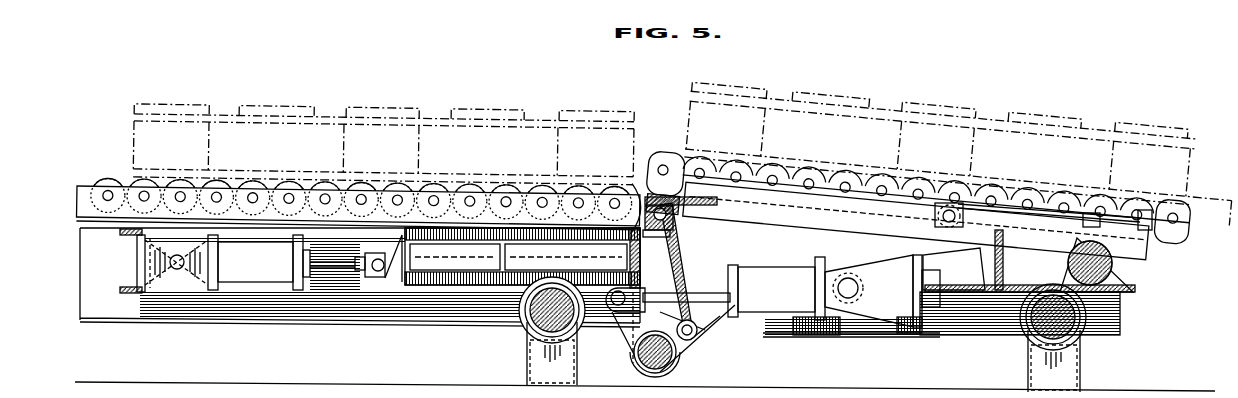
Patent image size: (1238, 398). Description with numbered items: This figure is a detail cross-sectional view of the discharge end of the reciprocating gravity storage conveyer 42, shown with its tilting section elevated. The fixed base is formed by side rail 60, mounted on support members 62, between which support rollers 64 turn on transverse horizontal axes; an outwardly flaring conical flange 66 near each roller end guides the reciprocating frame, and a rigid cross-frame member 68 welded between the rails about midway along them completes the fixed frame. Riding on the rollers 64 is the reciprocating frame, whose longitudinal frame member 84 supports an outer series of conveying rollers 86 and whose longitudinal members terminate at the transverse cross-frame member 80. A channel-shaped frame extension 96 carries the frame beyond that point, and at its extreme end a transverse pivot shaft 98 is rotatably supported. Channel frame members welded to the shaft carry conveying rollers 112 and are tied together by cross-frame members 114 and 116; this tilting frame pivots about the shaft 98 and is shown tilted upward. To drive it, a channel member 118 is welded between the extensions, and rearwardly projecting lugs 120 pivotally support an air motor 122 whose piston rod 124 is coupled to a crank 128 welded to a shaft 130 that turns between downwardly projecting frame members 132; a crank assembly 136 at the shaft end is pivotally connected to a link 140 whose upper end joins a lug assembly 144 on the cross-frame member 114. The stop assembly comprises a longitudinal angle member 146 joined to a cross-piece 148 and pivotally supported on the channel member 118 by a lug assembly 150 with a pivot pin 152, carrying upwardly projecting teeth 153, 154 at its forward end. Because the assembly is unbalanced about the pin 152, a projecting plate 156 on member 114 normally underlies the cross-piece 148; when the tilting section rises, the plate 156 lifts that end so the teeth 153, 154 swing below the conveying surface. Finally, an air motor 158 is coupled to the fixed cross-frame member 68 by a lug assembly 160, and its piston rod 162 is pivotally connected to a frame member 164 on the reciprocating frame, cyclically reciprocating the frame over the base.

The storage conveyer 42 is at (292, 327).
The side rail 60 is at (397, 312).
The support member 62 is at (527, 370).
The support roller 64 is at (535, 318).
The conical flange 66 is at (1030, 312).
The cross-frame member 68 is at (138, 262).
The cross-frame member 80 is at (630, 253).
The longitudinally extending frame member 84 is at (85, 188).
The conveying roller 86 is at (110, 178).
The frame extension 96 is at (809, 258).
The pivot shaft 98 is at (1115, 262).
The conveying roller 112 is at (1030, 192).
The cross-frame member 114 is at (637, 192).
The cross-frame member 116 is at (1003, 247).
The channel member 118 is at (935, 338).
The lug 120 is at (906, 278).
The air motor 122 is at (798, 280).
The piston rod 124 is at (712, 282).
The crank 128 is at (628, 330).
The shaft 130 is at (664, 362).
The frame member 132 is at (705, 330).
The crank assembly 136 is at (695, 342).
The link 140 is at (668, 265).
The lug assembly 144 is at (674, 218).
The angle member 146 is at (868, 215).
The cross-piece 148 is at (718, 210).
The lug assembly 150 is at (970, 280).
The pivot pin 152 is at (958, 208).
The tooth 153 is at (1097, 210).
The tooth 154 is at (1182, 203).
The projecting plate 156 is at (683, 192).
The air motor 158 is at (265, 266).
The lug assembly 160 is at (165, 275).
The piston rod 162 is at (346, 272).
The frame member 164 is at (414, 250).